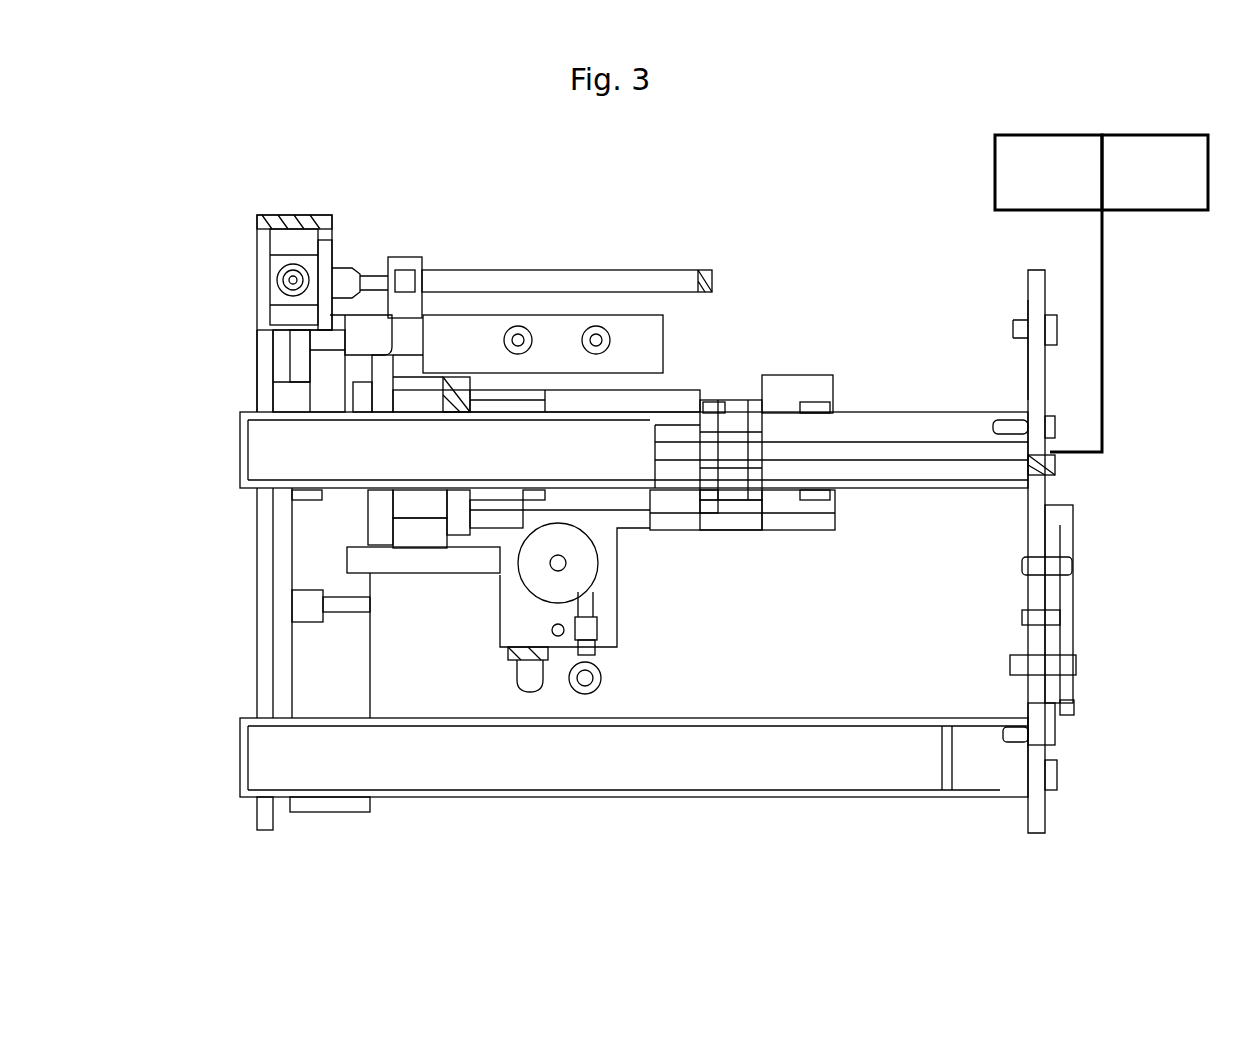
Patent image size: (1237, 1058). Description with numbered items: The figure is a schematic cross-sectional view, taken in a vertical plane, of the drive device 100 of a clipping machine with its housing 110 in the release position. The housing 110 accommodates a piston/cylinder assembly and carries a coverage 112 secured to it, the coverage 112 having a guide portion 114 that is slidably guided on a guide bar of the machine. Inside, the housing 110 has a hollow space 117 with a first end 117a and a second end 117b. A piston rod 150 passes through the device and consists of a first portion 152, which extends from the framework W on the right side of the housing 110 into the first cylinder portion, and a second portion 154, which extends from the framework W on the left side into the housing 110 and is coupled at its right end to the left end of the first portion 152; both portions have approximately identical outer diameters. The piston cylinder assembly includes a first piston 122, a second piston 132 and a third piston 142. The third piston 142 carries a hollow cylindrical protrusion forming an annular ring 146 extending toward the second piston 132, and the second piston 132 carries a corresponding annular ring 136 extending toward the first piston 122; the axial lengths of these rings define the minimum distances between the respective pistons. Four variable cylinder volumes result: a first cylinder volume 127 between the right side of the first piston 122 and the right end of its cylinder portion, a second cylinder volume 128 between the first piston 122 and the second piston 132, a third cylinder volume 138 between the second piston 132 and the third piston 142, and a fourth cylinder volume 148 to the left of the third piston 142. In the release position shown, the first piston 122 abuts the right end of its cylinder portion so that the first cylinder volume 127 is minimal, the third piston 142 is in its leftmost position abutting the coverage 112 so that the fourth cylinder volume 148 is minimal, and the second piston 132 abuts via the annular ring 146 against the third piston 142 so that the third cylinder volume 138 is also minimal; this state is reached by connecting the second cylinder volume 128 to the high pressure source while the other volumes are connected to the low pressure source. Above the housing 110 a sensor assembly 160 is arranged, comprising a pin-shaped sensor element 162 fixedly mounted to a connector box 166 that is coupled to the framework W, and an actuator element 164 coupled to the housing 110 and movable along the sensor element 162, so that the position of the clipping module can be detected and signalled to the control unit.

The drive device 100 is at (866, 210).
The housing 110 is at (651, 352).
The coverage 112 is at (333, 393).
The guide portion 114 is at (346, 802).
The hollow space 117 is at (576, 402).
The first end 117a is at (308, 374).
The second end 117b is at (758, 396).
The first piston 122 is at (743, 499).
The first cylinder volume 127 is at (755, 392).
The second cylinder volume 128 is at (681, 500).
The second piston 132 is at (461, 392).
The annular ring 136 is at (503, 508).
The third cylinder volume 138 is at (360, 518).
The third piston 142 is at (378, 385).
The annular ring 146 is at (430, 519).
The fourth cylinder volume 148 is at (423, 498).
The piston rod 150 is at (1000, 273).
The first portion 152 is at (951, 428).
The second portion 154 is at (236, 457).
The sensor assembly 160 is at (342, 176).
The sensor element 162 is at (493, 278).
The actuator element 164 is at (413, 259).
The connector box 166 is at (306, 246).
The framework W is at (262, 350).